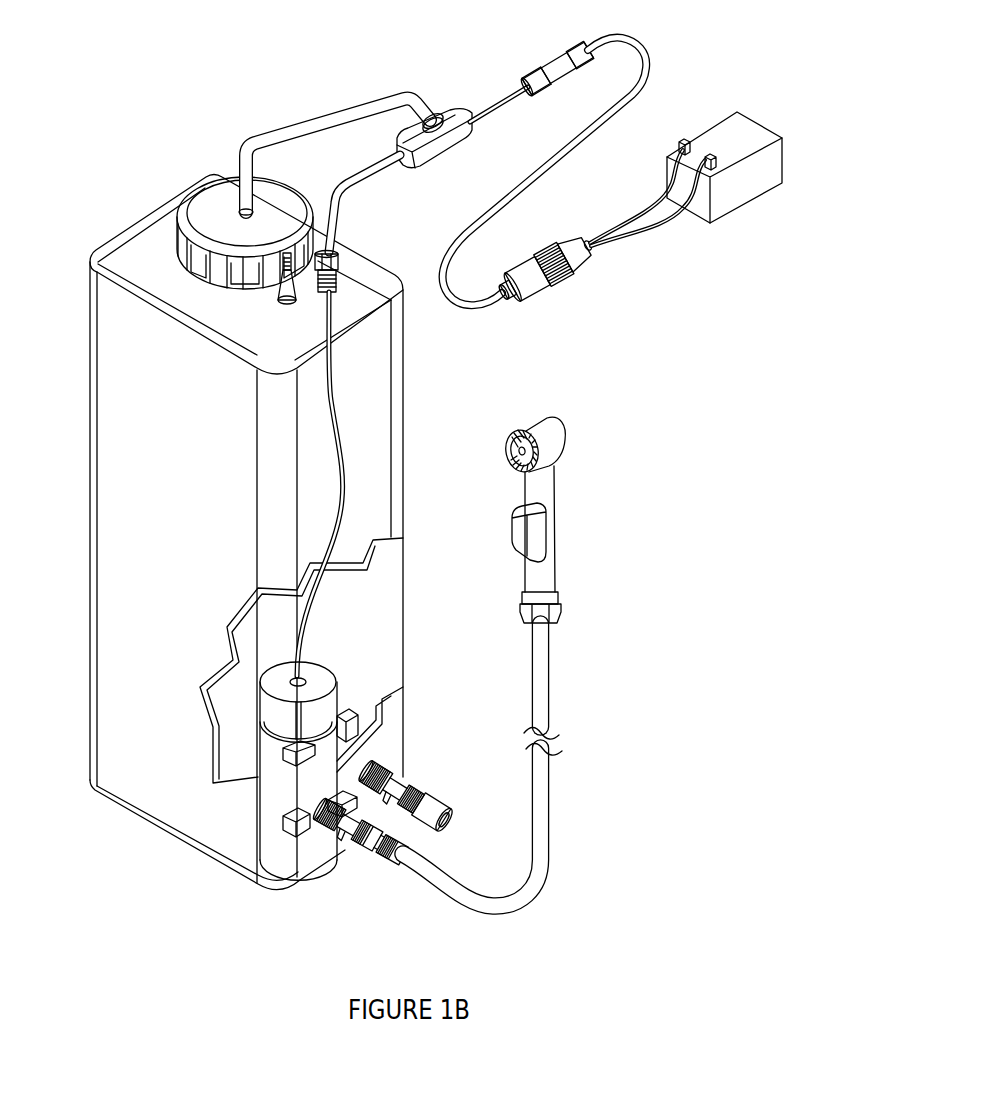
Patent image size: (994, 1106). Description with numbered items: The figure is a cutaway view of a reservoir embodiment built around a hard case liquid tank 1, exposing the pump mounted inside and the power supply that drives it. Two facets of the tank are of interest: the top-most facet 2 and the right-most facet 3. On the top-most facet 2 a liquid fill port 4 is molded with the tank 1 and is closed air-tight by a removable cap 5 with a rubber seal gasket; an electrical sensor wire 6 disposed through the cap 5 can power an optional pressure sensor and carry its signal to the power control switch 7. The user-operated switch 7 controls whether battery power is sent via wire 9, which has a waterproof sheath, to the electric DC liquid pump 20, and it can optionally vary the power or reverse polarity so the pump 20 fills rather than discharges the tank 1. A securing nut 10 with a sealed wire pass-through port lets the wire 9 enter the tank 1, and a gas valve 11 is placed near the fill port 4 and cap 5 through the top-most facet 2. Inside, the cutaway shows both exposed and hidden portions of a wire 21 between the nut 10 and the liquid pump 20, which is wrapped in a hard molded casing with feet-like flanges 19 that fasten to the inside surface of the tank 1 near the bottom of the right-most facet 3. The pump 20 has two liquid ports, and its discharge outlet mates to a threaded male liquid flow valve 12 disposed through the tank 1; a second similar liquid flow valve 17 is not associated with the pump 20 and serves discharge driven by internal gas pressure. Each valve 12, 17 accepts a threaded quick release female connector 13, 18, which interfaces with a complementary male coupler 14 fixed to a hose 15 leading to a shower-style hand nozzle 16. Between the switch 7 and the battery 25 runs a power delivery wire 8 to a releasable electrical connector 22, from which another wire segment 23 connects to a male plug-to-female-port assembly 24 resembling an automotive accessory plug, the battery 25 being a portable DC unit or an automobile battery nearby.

The hard case liquid tank 1 is at (163, 203).
The top-most facet 2 is at (246, 556).
The right-most facet 3 is at (301, 591).
The liquid fill port 4 is at (210, 282).
The cap 5 is at (247, 213).
The electrical sensor wire 6 is at (291, 127).
The power control switch 7 is at (453, 113).
The power delivery wire 8 is at (493, 101).
The wire 9 is at (342, 200).
The securing nut 10 is at (337, 263).
The gas valve 11 is at (278, 306).
The liquid flow valve 12 is at (335, 832).
The quick release female connector 13 is at (367, 857).
The male coupler 14 is at (397, 868).
The hose 15 is at (549, 822).
The shower-style hand nozzle 16 is at (556, 488).
The liquid flow valve 17 is at (382, 771).
The quick release female connector 18 is at (437, 797).
The feet-like flanges 19 is at (348, 716).
The electric DC liquid pump 20 is at (306, 672).
The wire 21 is at (343, 515).
The releasable electrical connector 22 is at (548, 55).
The wire segment 23 is at (648, 60).
The male plug-to-female-port assembly 24 is at (537, 293).
The battery 25 is at (720, 218).